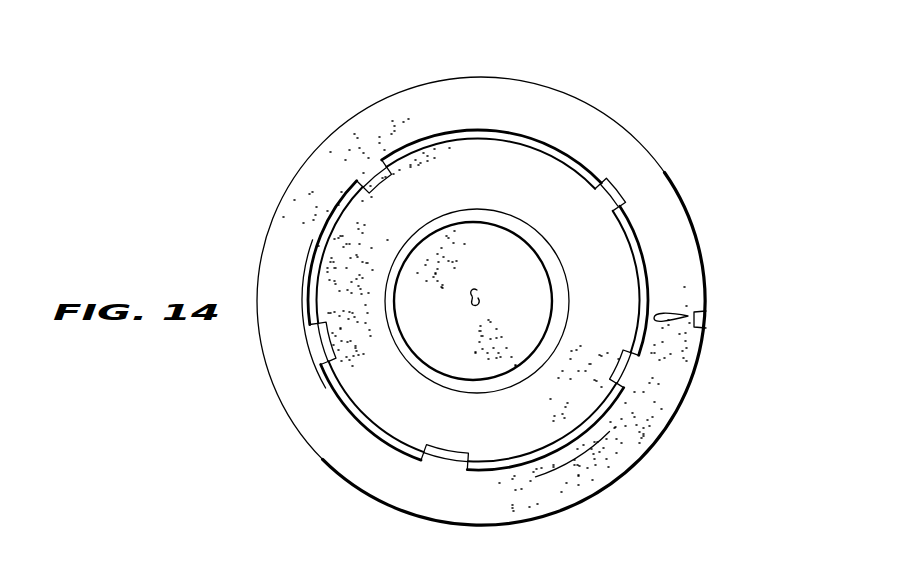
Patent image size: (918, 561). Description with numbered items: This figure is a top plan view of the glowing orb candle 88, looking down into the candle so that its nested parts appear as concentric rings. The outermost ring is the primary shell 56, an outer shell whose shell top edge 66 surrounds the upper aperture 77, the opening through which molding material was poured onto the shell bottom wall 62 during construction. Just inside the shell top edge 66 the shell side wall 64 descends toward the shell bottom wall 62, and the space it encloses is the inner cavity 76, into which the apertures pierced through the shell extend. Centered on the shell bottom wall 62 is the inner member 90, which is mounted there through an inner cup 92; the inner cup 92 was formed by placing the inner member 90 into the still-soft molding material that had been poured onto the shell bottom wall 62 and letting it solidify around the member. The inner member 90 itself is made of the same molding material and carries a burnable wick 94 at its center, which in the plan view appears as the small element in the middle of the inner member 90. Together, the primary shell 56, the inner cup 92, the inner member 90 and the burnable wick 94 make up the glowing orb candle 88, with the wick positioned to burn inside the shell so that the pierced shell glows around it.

The primary shell 56 is at (413, 107).
The shell bottom wall 62 is at (610, 288).
The shell side wall 64 is at (637, 430).
The shell top edge 66 is at (650, 334).
The inner cavity 76 is at (614, 310).
The upper aperture 77 is at (400, 192).
The glowing orb candle 88 is at (260, 192).
The inner member 90 is at (505, 255).
The inner cup 92 is at (555, 272).
The burnable wick 94 is at (474, 292).